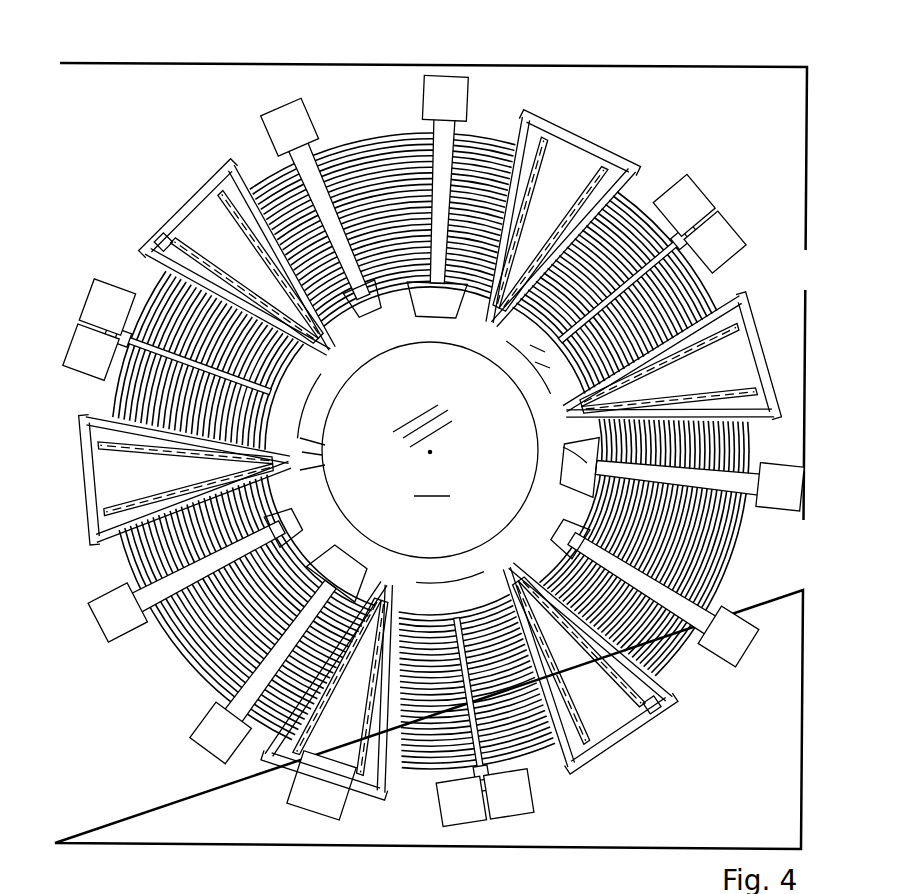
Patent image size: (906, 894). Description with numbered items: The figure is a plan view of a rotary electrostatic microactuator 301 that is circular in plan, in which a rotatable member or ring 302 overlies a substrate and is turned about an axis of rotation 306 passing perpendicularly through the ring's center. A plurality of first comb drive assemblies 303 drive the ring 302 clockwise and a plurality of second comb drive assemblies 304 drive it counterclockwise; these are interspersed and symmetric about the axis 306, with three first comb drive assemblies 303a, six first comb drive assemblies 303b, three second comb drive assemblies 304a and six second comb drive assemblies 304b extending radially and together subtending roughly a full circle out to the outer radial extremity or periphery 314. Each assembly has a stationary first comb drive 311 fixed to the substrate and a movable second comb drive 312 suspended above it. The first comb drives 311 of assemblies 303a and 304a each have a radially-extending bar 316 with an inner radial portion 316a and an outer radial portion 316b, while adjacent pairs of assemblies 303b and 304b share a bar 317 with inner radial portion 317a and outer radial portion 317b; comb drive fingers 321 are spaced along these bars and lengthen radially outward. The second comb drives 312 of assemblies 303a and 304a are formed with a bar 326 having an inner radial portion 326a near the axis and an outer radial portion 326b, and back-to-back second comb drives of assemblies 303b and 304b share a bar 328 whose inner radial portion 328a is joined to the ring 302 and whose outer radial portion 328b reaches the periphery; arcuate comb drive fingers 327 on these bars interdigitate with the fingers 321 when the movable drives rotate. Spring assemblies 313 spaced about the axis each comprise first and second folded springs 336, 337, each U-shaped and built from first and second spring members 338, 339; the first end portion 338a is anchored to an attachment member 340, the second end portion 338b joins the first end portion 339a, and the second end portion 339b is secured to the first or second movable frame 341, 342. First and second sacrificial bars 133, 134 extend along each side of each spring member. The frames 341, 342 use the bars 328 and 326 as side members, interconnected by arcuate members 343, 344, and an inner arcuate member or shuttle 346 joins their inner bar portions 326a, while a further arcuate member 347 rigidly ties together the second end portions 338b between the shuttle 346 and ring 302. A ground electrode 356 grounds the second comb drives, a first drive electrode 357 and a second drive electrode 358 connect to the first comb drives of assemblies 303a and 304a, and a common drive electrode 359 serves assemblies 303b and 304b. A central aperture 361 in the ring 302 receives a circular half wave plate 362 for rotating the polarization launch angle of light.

The rotary electrostatic microactuator 301 is at (740, 64).
The rotatable member or ring 302 is at (445, 340).
The first comb drive assembly 303 is at (565, 805).
The first comb drive assembly 303a is at (682, 170).
The first comb drive assembly 303b is at (255, 132).
The second comb drive assembly 304 is at (113, 570).
The second comb drive assembly 304a is at (740, 262).
The second comb drive assembly 304b is at (342, 118).
The axis of rotation 306 is at (433, 452).
The first comb drive 311 is at (292, 158).
The second comb drive 312 is at (640, 150).
The spring assembly 313 is at (608, 110).
The outer radial extremity or periphery 314 is at (760, 646).
The radially-extending bar 316 is at (137, 323).
The inner radial portion 316a is at (300, 440).
The outer radial portion 316b is at (145, 366).
The radially-extending bar 317 is at (758, 484).
The inner radial portion 317a is at (563, 447).
The outer radial portion 317b is at (756, 468).
The comb drive fingers 321 is at (285, 145).
The bar 326 is at (612, 148).
The inner radial portion 326a is at (522, 348).
The outer radial portion 326b is at (655, 175).
The comb drive fingers 327 is at (410, 768).
The bar 328 is at (345, 328).
The inner radial portion 328a is at (548, 533).
The outer radial portion 328b is at (393, 128).
The first folded spring 336 is at (555, 140).
The second folded spring 337 is at (772, 348).
The first spring member 338 is at (550, 180).
The first end portion 338a is at (225, 192).
The second end portion 338b is at (345, 385).
The second spring member 339 is at (565, 188).
The first end portion 339a is at (300, 455).
The second end portion 339b is at (125, 458).
The attachment member 340 is at (210, 200).
The first movable frame 341 is at (583, 123).
The second movable frame 342 is at (775, 340).
The arcuate member 343 is at (625, 125).
The arcuate member 344 is at (182, 222).
The inner arcuate member or shuttle 346 is at (447, 402).
The arcuate member 347 is at (423, 583).
The ground electrode 356 is at (312, 790).
The first drive electrode 357 is at (720, 208).
The second drive electrode 358 is at (745, 240).
The common drive electrode 359 is at (437, 83).
The central aperture 361 is at (370, 563).
The circular half wave plate 362 is at (432, 486).
The first sacrificial bar 133 is at (205, 218).
The second sacrificial bar 134 is at (225, 232).